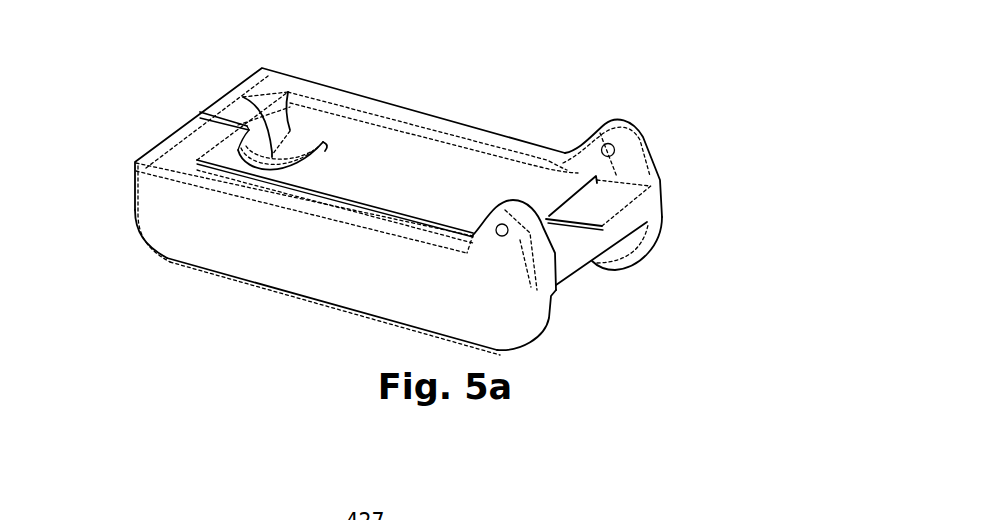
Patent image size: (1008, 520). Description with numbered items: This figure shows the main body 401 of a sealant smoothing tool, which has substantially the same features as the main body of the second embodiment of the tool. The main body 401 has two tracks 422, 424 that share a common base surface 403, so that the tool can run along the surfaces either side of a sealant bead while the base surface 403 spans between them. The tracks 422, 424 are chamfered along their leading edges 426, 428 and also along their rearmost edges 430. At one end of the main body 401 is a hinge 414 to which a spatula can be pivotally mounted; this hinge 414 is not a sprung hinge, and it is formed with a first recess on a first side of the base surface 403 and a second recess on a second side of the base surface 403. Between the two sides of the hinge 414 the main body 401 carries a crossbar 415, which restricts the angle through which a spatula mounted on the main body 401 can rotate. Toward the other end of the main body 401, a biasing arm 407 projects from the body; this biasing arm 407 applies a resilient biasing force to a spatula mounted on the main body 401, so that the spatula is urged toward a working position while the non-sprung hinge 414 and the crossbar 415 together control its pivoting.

The main body 401 is at (140, 200).
The base surface 403 is at (320, 300).
The biasing arm 407 is at (243, 97).
The hinge 414 is at (658, 100).
The crossbar 415 is at (610, 198).
The track 422 is at (661, 234).
The track 424 is at (233, 275).
The leading edge 426 is at (658, 247).
The leading edge 428 is at (549, 327).
The rearmost edge 430 is at (147, 240).